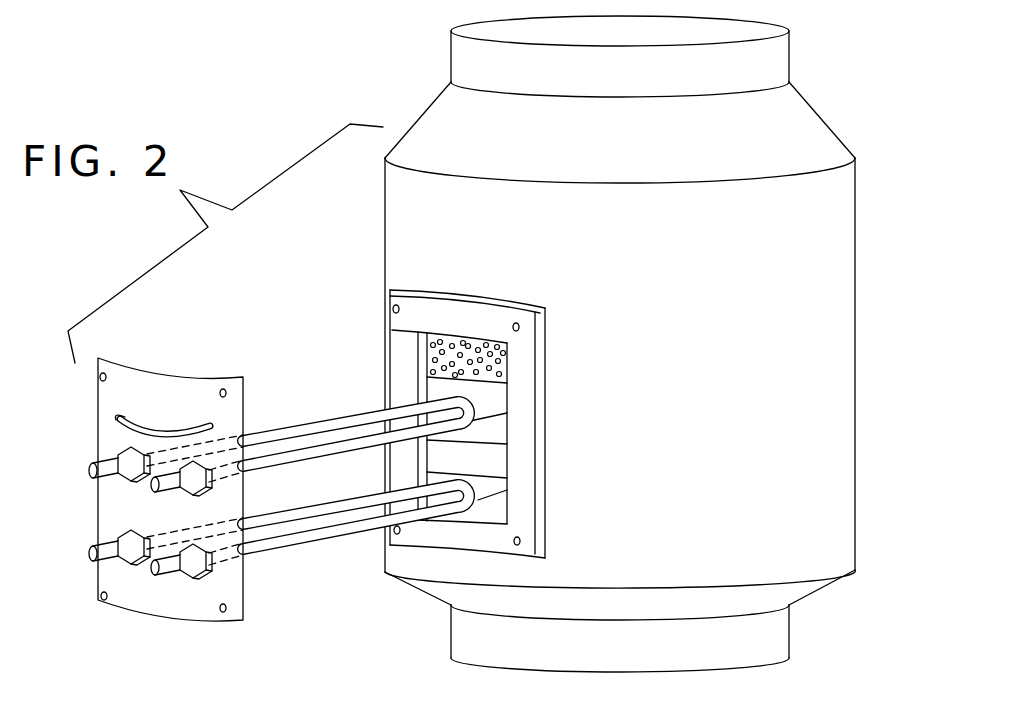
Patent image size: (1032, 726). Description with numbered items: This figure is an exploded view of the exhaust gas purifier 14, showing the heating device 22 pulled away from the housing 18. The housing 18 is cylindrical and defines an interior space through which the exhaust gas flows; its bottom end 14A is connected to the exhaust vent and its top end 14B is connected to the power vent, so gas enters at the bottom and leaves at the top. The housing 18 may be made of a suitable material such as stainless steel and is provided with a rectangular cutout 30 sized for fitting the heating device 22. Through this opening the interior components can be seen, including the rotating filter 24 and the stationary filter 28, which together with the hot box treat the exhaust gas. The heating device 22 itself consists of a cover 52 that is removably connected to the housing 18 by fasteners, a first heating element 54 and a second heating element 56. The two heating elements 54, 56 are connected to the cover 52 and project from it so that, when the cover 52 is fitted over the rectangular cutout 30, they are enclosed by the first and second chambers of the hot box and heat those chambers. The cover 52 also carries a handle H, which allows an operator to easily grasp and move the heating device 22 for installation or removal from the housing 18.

The exhaust gas purifier 14 is at (386, 70).
The bottom end 14A is at (789, 628).
The top end 14B is at (783, 55).
The housing 18 is at (850, 200).
The heating device 22 is at (247, 514).
The rotating filter 24 is at (490, 470).
The stationary filter 28 is at (492, 376).
The rectangular cutout 30 is at (478, 519).
The cover 52 is at (160, 607).
The first heating element 54 is at (321, 530).
The second heating element 56 is at (328, 421).
The handle H is at (118, 425).